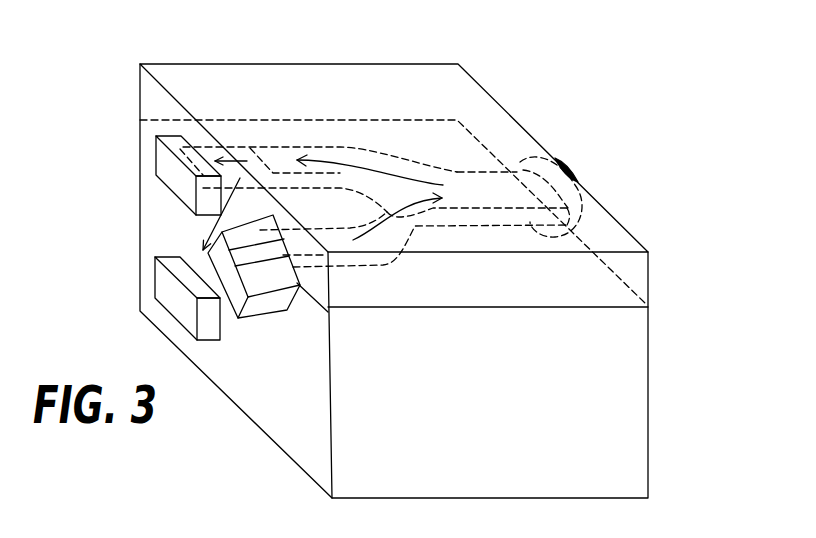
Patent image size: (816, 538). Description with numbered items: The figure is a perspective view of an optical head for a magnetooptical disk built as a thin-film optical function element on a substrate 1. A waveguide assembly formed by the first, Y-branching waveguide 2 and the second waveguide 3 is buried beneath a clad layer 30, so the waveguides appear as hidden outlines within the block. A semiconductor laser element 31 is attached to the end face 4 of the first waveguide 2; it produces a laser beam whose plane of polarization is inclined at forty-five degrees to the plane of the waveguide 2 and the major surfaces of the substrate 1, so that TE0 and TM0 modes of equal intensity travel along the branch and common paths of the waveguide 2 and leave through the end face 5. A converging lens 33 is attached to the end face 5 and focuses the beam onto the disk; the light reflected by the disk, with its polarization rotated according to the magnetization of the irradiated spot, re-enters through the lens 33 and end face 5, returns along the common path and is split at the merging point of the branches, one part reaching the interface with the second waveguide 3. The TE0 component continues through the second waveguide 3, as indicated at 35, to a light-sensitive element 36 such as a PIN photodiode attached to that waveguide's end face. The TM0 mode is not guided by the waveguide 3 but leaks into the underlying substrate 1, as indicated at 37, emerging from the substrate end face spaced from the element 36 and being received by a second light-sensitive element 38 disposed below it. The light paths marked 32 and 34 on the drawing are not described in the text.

The substrate 1 is at (637, 368).
The first Y-branching waveguide 2 is at (474, 164).
The second waveguide 3 is at (224, 158).
The end face 4 is at (262, 232).
The end face 5 is at (580, 212).
The clad layer 30 is at (417, 80).
The semiconductor laser element 31 is at (256, 300).
The output light path 32 is at (382, 237).
The converging lens 33 is at (573, 170).
The reflected light path 34 is at (350, 167).
The TE0 component propagation 35 is at (237, 160).
The light-sensitive element 36 is at (168, 160).
The TM0 mode 37 is at (195, 237).
The second light-sensitive element 38 is at (168, 282).